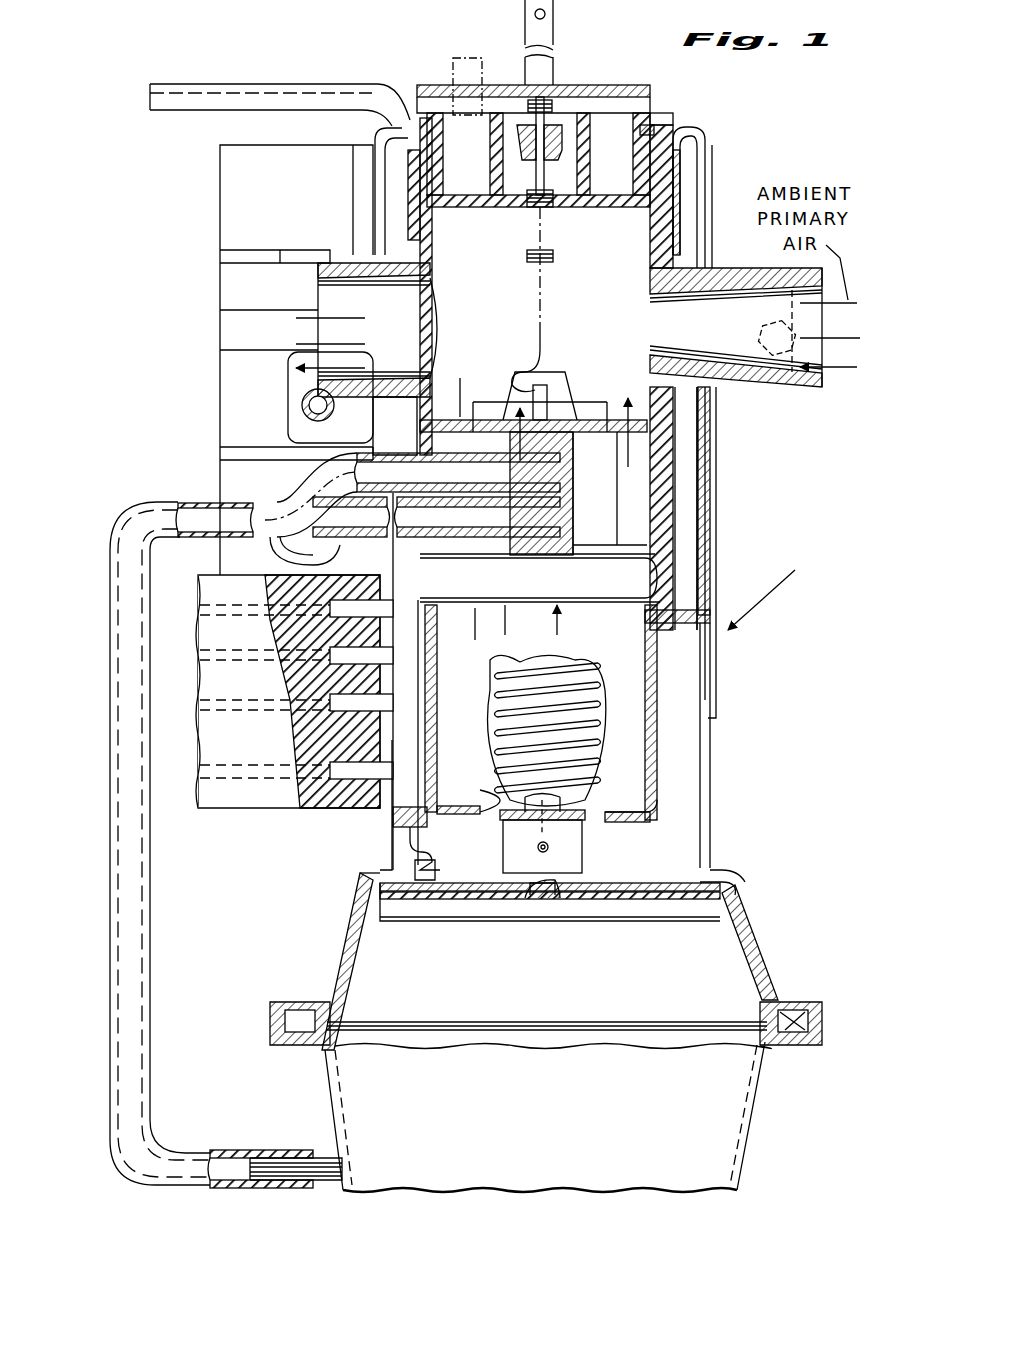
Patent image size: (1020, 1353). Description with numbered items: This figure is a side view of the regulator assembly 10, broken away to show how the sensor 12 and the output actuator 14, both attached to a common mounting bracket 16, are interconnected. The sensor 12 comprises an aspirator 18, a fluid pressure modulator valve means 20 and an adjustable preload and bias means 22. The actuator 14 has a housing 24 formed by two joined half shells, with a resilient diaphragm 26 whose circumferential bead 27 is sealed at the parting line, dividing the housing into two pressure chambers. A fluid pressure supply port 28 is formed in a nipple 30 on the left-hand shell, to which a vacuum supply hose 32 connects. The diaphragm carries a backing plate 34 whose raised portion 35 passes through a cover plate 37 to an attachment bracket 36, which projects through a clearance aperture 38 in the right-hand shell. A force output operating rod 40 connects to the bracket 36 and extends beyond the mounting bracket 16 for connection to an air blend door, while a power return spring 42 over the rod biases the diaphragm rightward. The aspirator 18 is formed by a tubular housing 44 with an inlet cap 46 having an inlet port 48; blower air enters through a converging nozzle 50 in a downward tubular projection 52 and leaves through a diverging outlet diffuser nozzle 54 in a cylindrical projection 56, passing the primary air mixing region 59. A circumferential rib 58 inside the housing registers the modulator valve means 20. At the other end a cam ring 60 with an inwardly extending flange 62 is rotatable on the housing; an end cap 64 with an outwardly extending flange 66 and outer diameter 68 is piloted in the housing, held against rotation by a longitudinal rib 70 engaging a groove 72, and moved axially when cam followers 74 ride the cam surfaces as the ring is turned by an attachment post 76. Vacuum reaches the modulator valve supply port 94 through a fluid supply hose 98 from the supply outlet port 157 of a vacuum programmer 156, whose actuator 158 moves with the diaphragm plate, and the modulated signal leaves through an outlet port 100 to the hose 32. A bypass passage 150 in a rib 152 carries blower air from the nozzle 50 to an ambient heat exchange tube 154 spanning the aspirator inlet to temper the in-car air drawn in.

The regulator assembly 10 is at (774, 588).
The sensor 12 is at (285, 415).
The output actuator 14 is at (325, 960).
The mounting bracket 16 is at (712, 769).
The aspirator 18 is at (722, 255).
The fluid pressure modulator valve means 20 is at (675, 480).
The adjustable preload and bias means 22 is at (562, 224).
The housing 24 is at (752, 1139).
The diaphragm 26 is at (350, 955).
The circumferential bead 27 is at (290, 1046).
The fluid pressure supply port 28 is at (246, 1150).
The nipple 30 is at (325, 1156).
The vacuum supply hose 32 is at (400, 545).
The backing plate 34 is at (496, 905).
The raised portion 35 is at (548, 899).
The attachment bracket 36 is at (583, 852).
The cover plate 37 is at (640, 884).
The clearance aperture 38 is at (700, 882).
The force output operating rod 40 is at (556, 28).
The power return spring 42 is at (495, 735).
The tubular housing 44 is at (420, 246).
The inlet cap 46 is at (650, 692).
The inlet port 48 is at (492, 758).
The converging nozzle 50 is at (785, 378).
The tubular projection 52 is at (766, 387).
The diverging outlet diffuser nozzle 54 is at (318, 288).
The cylindrical projection 56 is at (340, 398).
The circumferential rib 58 is at (632, 402).
The primary air mixing region 59 is at (478, 238).
The cam ring 60 is at (408, 170).
The radially inwardly extending flange 62 is at (402, 120).
The end cap 64 is at (512, 112).
The radially outwardly extending flange 66 is at (665, 115).
The outer diameter 68 is at (660, 170).
The longitudinal rib 70 is at (536, 140).
The longitudinal groove 72 is at (562, 162).
The cam followers 74 is at (648, 160).
The attachment post 76 is at (468, 50).
The fluid pressure supply port 94 is at (440, 472).
The fluid supply hose 98 is at (278, 482).
The outlet port 100 is at (385, 517).
The bypass passage 150 is at (690, 447).
The rib 152 is at (712, 521).
The ambient heat exchange tube 154 is at (590, 600).
The vacuum programmer 156 is at (420, 700).
The supply outlet port 157 is at (306, 560).
The actuator 158 is at (392, 848).